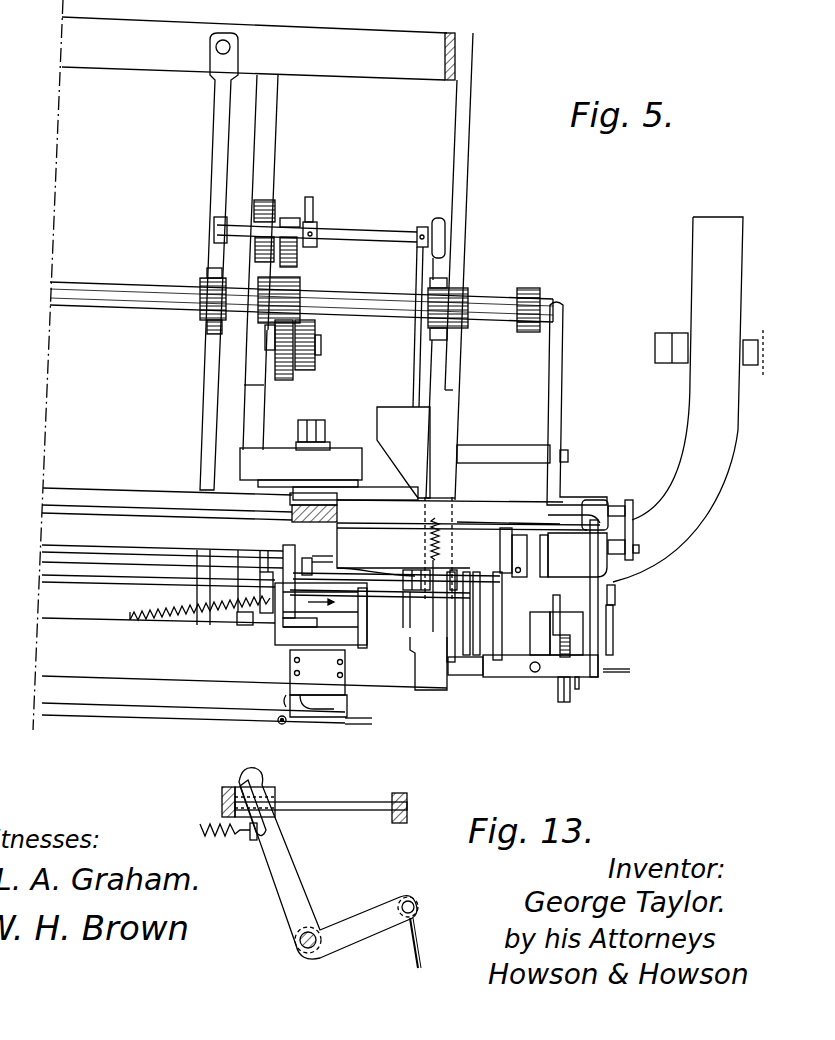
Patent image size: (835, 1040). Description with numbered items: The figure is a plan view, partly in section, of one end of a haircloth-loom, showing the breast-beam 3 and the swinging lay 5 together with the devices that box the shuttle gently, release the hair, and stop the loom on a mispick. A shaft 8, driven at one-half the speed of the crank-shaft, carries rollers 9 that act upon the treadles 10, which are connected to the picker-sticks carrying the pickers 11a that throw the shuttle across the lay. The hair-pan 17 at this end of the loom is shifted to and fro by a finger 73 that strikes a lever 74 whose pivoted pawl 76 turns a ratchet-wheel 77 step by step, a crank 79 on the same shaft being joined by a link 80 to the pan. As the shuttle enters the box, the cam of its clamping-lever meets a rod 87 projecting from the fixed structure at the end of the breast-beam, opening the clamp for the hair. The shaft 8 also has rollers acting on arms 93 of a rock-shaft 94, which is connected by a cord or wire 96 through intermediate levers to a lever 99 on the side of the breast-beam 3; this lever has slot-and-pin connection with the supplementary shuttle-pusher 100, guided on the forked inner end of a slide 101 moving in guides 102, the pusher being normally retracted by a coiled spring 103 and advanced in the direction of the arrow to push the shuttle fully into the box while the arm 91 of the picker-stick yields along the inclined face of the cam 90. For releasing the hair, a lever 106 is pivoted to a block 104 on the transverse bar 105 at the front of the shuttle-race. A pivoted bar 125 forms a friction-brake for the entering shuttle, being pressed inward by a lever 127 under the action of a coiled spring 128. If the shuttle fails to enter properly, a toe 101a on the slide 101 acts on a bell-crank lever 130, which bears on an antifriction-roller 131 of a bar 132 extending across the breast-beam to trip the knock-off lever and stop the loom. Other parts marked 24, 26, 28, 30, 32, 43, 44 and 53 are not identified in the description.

In FIG. 5, the breast-beam 3 is at (244, 668).
In FIG. 5, the swinging lay 5 is at (321, 561).
In FIG. 5, the shaft 8 is at (160, 290).
In FIG. 5, the rollers 9 is at (262, 204).
In FIG. 5, the treadles 10 is at (255, 390).
In FIG. 5, the pickers 11a is at (594, 502).
In FIG. 5, the hair-pan 17 is at (688, 399).
In FIG. 5, the shaft collar 24 is at (530, 290).
In FIG. 5, the bracket arm 26 is at (560, 405).
In FIG. 5, the rod 28 is at (528, 527).
In FIG. 5, the block 30 is at (552, 512).
In FIG. 5, the gear 32 is at (306, 370).
In FIG. 5, the base block 43 is at (508, 658).
In FIG. 5, the guide block 44 is at (498, 541).
In FIG. 5, the pin 53 is at (622, 595).
In FIG. 5, the finger 73 is at (566, 613).
In FIG. 5, the lever 74 is at (580, 688).
In FIG. 5, the pivoted pawl 76 is at (558, 690).
In FIG. 5, the ratchet-wheel 77 is at (566, 703).
In FIG. 5, the crank 79 is at (611, 662).
In FIG. 5, the link 80 is at (614, 627).
In FIG. 5, the rod 87 is at (479, 613).
In FIG. 5, the cam 90 is at (403, 452).
In FIG. 5, the arm 91 is at (383, 493).
In FIG. 5, the arms 93 is at (311, 198).
In FIG. 5, the rock-shaft 94 is at (366, 228).
In FIG. 5, the cord or wire 96 is at (421, 228).
In FIG. 5, the lever 99 is at (360, 628).
In FIG. 13, the lever 99 is at (296, 880).
In FIG. 5, the supplementary shuttle-pusher 100 is at (321, 614).
In FIG. 13, the supplementary shuttle-pusher 100 is at (272, 796).
In FIG. 5, the slide 101 is at (306, 631).
In FIG. 5, the toe 101a is at (318, 699).
In FIG. 5, the guides 102 is at (345, 668).
In FIG. 5, the coiled spring 103 is at (200, 605).
In FIG. 13, the coiled spring 103 is at (228, 841).
In FIG. 5, the block 104 is at (310, 574).
In FIG. 5, the transverse bar 105 is at (175, 564).
In FIG. 5, the lever 106 is at (306, 557).
In FIG. 5, the bar 125 is at (396, 571).
In FIG. 5, the lever 127 is at (420, 645).
In FIG. 5, the coiled spring 128 is at (428, 540).
In FIG. 5, the bell-crank lever 130 is at (285, 705).
In FIG. 5, the antifriction-roller 131 is at (279, 724).
In FIG. 5, the bar 132 is at (175, 710).